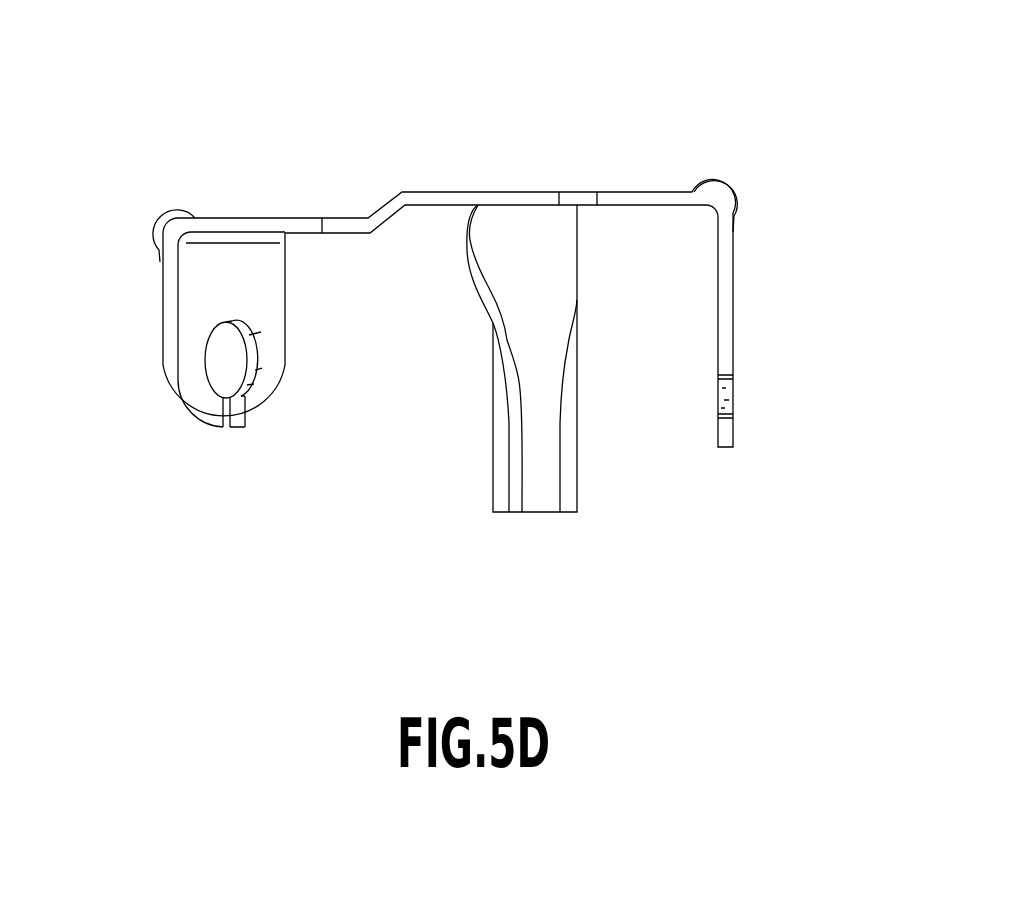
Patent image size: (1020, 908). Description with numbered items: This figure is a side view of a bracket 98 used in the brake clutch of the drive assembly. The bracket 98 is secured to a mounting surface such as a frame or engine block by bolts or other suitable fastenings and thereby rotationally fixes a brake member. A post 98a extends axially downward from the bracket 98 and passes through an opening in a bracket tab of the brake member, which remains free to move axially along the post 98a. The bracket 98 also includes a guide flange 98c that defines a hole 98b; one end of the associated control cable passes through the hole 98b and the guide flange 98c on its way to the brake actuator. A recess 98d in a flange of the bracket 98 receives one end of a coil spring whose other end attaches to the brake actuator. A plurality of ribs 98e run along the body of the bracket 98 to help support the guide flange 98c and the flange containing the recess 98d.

The bracket 98 is at (686, 121).
The post 98a is at (533, 512).
The hole 98b is at (205, 363).
The guide flange 98c is at (163, 305).
The recess 98d is at (718, 397).
The ribs 98e is at (167, 213).